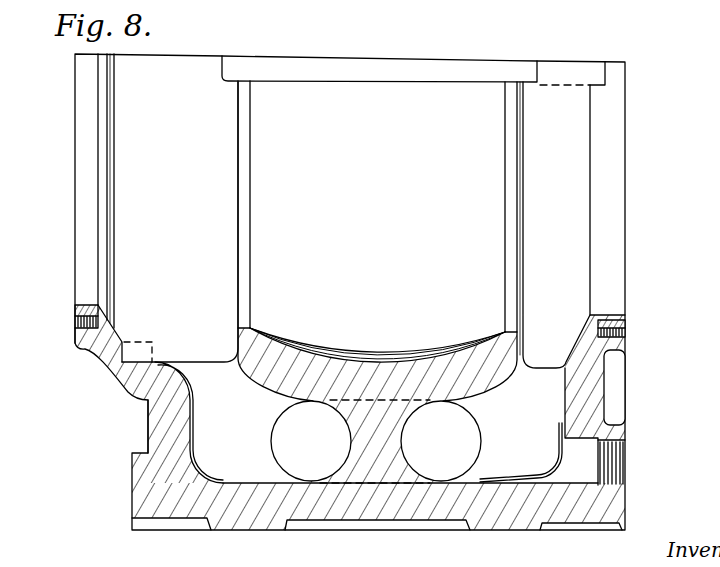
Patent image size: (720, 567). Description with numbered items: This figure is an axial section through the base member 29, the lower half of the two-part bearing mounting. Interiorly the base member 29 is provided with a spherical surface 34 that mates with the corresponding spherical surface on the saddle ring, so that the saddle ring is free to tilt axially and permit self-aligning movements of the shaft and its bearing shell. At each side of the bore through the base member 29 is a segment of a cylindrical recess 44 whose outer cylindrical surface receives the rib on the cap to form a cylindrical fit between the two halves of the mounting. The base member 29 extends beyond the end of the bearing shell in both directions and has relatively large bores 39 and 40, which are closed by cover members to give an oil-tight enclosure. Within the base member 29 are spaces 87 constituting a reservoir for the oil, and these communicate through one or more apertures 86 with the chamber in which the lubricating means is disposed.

The cylindrical recess 44 is at (338, 66).
The bore 40 is at (82, 303).
The bore 39 is at (612, 310).
The aperture 86 is at (200, 361).
The spherical surface 34 is at (326, 352).
The base member 29 is at (160, 475).
The space 87 is at (247, 468).